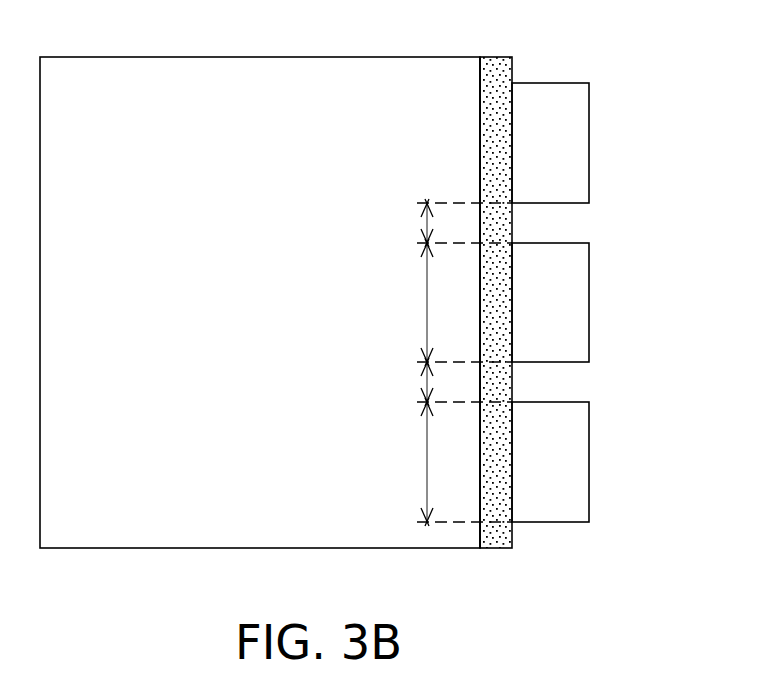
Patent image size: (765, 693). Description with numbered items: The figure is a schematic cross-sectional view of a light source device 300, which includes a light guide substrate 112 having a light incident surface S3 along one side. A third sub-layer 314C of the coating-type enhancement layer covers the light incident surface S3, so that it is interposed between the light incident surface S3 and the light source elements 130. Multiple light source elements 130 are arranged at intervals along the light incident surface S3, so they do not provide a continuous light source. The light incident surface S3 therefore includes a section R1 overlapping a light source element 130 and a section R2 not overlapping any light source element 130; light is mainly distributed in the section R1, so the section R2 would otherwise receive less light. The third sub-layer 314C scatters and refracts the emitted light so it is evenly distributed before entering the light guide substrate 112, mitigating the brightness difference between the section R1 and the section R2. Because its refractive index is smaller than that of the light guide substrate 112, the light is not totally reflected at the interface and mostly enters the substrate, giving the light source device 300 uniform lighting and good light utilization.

The light guide substrate 112 is at (290, 56).
The light incident surface S3 is at (480, 117).
The third sub-layer 314C is at (497, 64).
The light source element 130 is at (573, 133).
The section R1 is at (450, 382).
The section R2 is at (450, 302).
The light source device 300 is at (355, 305).